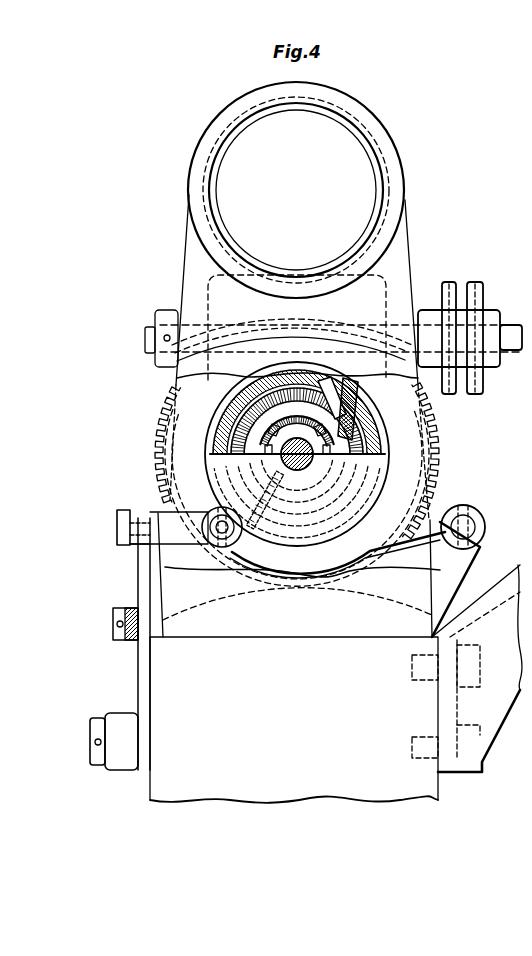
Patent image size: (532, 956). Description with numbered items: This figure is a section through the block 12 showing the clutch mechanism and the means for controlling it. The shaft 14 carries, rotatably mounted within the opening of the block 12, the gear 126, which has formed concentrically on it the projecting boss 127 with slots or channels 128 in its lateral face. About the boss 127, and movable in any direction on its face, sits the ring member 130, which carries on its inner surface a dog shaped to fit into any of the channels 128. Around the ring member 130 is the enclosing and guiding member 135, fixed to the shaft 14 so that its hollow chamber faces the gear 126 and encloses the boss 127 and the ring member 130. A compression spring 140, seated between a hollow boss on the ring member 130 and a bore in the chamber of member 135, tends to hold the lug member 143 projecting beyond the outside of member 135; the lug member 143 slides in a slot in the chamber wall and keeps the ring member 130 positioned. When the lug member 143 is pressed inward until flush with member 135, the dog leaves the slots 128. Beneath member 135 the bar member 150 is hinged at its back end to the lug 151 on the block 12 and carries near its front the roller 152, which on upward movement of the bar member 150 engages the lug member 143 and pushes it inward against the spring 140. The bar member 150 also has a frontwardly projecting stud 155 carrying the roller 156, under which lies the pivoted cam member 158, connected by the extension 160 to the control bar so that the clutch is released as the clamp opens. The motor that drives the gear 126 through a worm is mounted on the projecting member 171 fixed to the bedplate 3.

The bedplate 3 is at (167, 678).
The block 12 is at (400, 261).
The shaft 14 is at (312, 462).
The gear 126 is at (383, 422).
The projecting boss 127 is at (322, 443).
The slots or channels 128 is at (287, 428).
The ring member 130 is at (335, 503).
The enclosing and guiding member 135 is at (390, 467).
The compression spring 140 is at (262, 502).
The lug member 143 is at (352, 388).
The bar member 150 is at (297, 558).
The lug 151 is at (473, 553).
The roller 152 is at (220, 508).
The frontwardly projecting stud 155 is at (160, 516).
The roller 156 is at (135, 512).
The cam member 158 is at (142, 579).
The extension 160 is at (133, 640).
The projecting member 171 is at (467, 700).